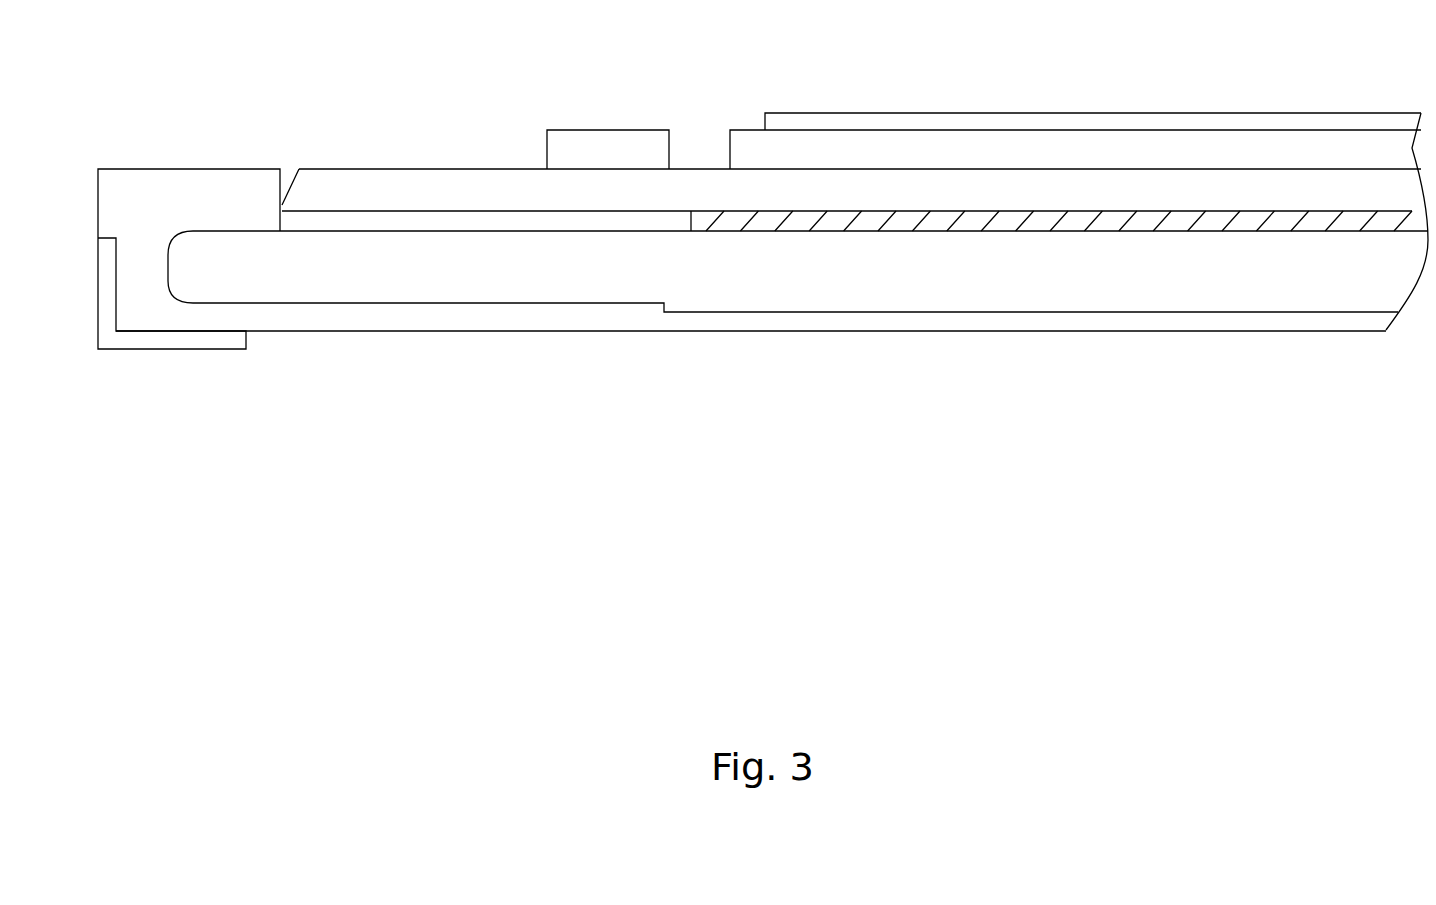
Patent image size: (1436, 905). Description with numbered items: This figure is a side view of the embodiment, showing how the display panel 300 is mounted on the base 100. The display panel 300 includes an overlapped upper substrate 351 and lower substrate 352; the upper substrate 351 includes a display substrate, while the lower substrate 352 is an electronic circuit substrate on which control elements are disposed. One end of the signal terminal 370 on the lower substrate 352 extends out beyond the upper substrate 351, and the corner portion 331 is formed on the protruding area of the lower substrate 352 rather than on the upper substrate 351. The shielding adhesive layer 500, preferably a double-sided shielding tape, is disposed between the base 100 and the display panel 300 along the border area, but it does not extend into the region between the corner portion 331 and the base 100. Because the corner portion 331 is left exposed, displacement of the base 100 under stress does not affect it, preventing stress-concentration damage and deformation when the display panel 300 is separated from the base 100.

The base 100 is at (747, 281).
The display panel 300 is at (1016, 150).
The corner portion 331 is at (448, 191).
The upper substrate 351 is at (890, 123).
The lower substrate 352 is at (1172, 186).
The signal terminal 370 is at (296, 170).
The shielding adhesive layer 500 is at (1109, 222).